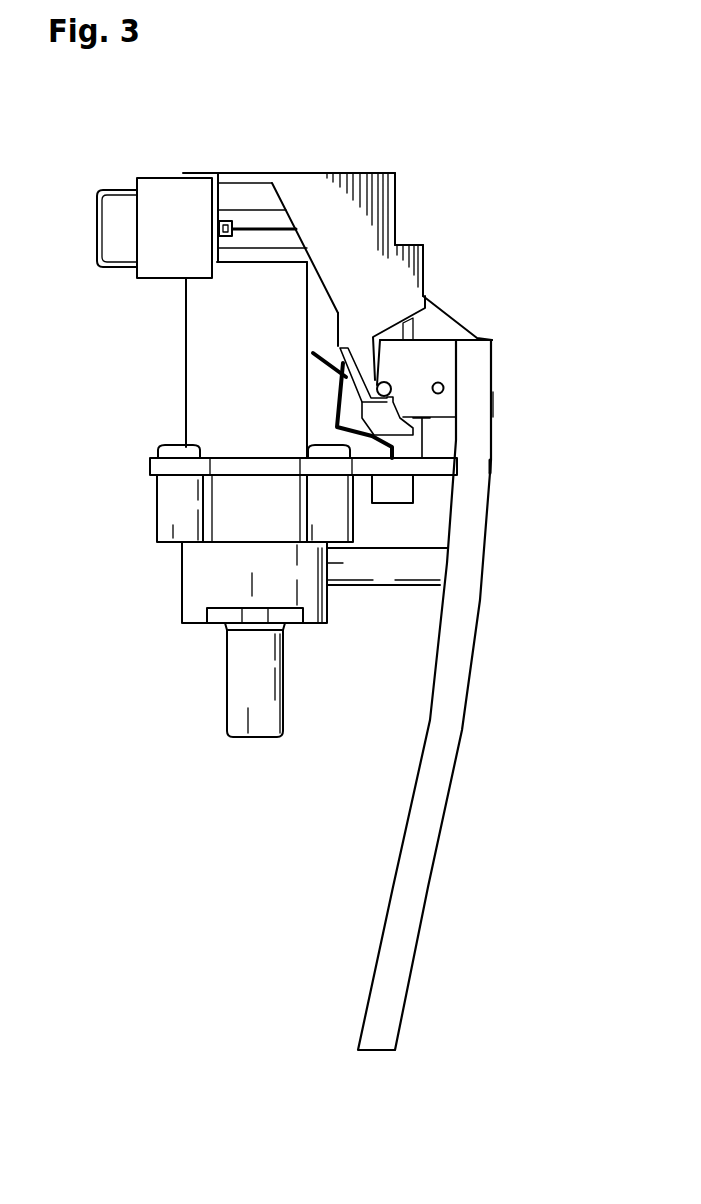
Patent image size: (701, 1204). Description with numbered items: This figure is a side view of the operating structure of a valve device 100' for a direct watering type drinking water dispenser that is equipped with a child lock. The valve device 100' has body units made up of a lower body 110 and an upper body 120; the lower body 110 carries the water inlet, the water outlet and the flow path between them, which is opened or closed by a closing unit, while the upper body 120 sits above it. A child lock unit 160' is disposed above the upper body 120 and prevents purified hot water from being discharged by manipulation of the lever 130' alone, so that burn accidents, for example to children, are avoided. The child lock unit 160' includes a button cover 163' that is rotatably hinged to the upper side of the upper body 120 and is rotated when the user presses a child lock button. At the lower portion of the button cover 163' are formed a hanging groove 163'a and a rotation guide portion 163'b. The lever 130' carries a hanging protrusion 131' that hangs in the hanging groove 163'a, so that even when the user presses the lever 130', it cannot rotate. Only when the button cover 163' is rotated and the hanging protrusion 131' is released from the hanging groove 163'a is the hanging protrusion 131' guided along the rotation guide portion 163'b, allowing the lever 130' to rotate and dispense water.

The valve device 100' is at (316, 561).
The lower body 110 is at (195, 605).
The upper body 120 is at (197, 353).
The lever 130' is at (452, 695).
The hanging protrusion 131' is at (430, 292).
The child lock unit 160' is at (154, 182).
The button cover 163' is at (448, 281).
The hanging groove 163'a is at (461, 327).
The rotation guide portion 163'b is at (461, 387).